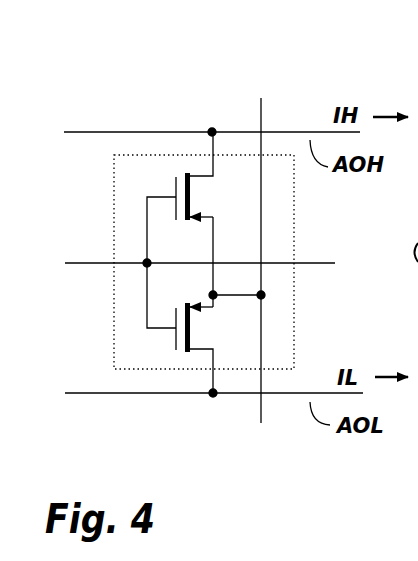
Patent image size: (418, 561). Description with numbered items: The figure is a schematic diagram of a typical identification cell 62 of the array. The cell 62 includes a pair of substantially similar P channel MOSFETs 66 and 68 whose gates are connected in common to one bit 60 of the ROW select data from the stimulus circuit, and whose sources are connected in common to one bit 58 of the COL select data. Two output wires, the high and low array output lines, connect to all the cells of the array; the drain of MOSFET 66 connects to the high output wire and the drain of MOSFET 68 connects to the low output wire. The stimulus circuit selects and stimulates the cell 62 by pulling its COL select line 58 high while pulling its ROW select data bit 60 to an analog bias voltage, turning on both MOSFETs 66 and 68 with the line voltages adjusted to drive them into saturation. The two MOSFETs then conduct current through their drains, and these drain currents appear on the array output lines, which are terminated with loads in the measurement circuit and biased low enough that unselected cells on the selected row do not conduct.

The COL select line 58 is at (262, 87).
The ROW select data bit 60 is at (90, 253).
The cell 62 is at (178, 115).
The P channel MOSFET 66 is at (172, 193).
The P channel MOSFET 68 is at (167, 337).